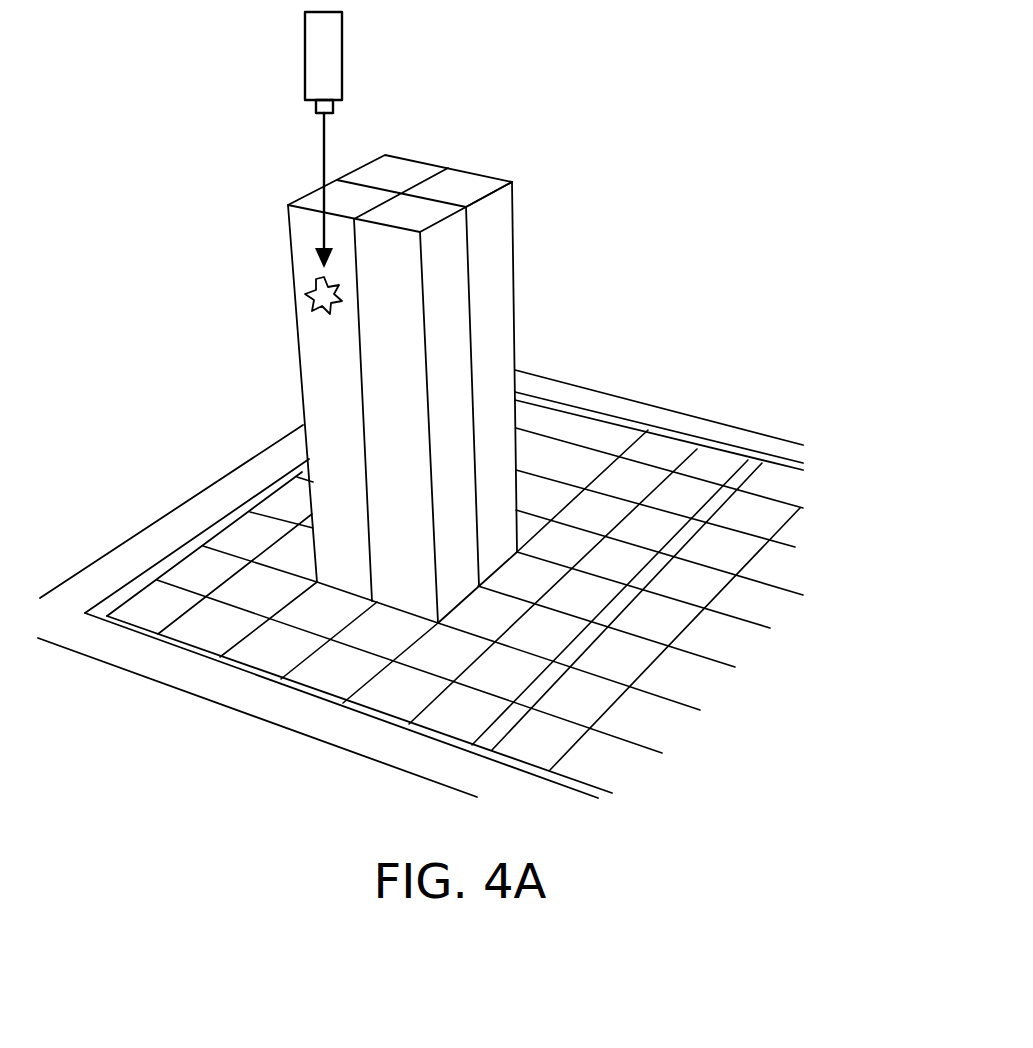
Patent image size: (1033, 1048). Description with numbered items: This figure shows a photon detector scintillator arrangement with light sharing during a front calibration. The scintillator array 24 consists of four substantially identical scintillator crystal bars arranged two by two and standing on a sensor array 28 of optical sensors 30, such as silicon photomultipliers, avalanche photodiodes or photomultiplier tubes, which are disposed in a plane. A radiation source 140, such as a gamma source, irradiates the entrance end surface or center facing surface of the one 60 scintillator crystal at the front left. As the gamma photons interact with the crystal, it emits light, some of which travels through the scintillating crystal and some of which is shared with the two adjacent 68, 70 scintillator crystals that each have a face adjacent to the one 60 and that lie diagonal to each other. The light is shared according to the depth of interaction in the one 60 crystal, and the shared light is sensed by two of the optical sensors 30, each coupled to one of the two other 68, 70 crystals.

The scintillator array 24 is at (270, 287).
The sensor array 28 is at (567, 376).
The optical sensor 30 is at (255, 655).
The one scintillator crystal bar 60 is at (300, 200).
The adjacent scintillator crystal bar 68 is at (443, 219).
The adjacent scintillator crystal bar 70 is at (372, 157).
The radiation source 140 is at (305, 63).